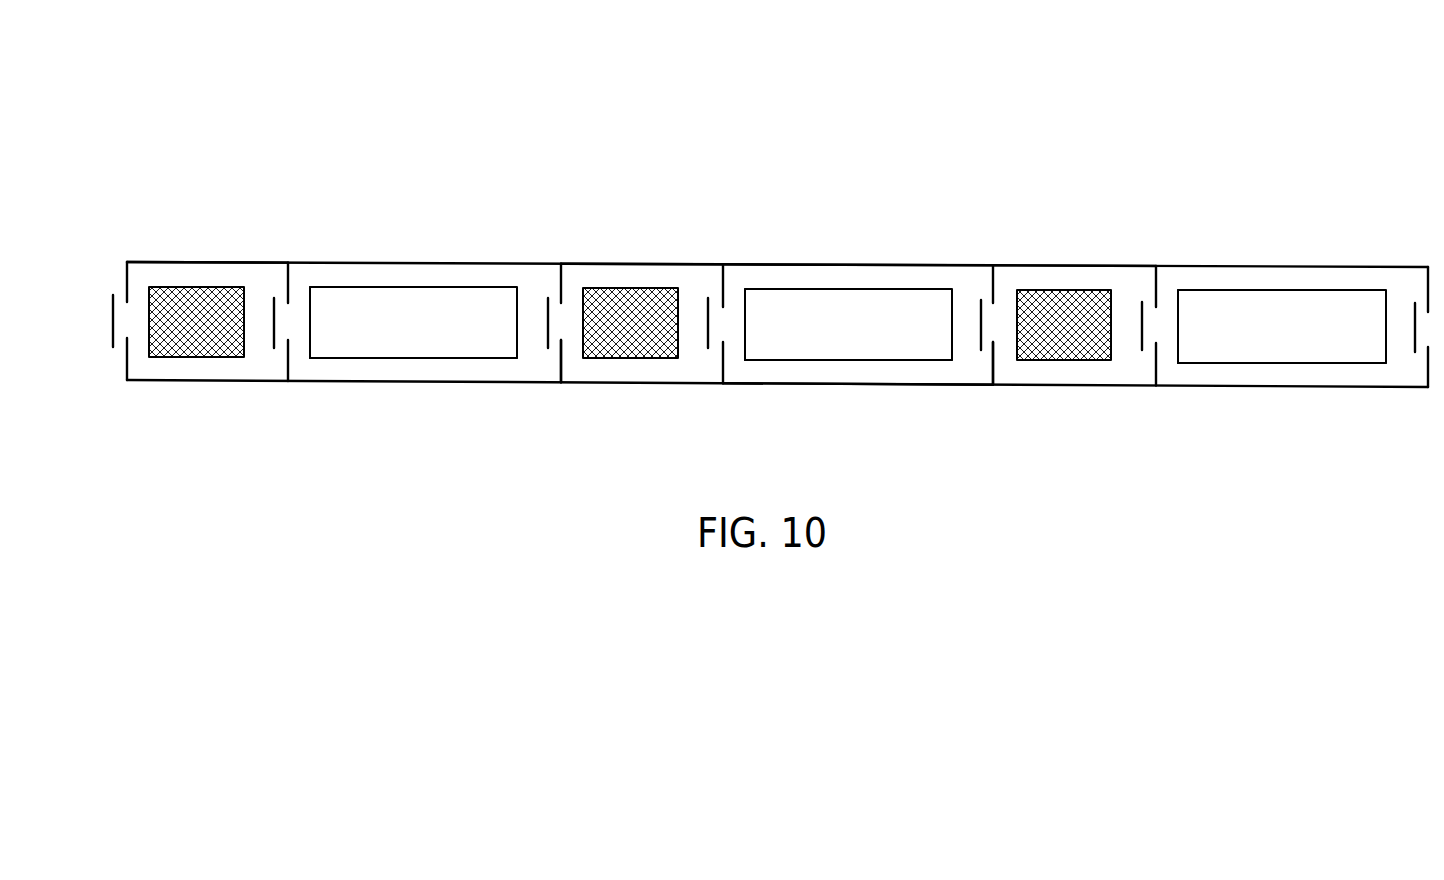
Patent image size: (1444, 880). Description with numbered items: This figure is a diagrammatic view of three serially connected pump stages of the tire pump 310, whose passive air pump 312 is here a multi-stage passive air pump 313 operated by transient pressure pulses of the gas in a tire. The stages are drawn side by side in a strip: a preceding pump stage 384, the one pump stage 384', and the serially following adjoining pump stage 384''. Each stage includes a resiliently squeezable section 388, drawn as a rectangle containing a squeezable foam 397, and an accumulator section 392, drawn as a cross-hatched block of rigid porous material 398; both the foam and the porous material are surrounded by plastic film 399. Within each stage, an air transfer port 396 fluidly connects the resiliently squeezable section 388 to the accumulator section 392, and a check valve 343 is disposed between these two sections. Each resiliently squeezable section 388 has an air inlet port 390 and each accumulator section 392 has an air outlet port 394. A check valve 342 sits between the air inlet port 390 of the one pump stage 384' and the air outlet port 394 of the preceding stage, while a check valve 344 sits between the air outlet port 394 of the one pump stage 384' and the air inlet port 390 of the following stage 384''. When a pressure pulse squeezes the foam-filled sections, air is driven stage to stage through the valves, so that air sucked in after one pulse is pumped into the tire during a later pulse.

The tire pump 310 is at (442, 122).
The passive air pump 312 is at (875, 388).
The multi-stage passive air pump 313 is at (818, 388).
The plastic film 399 is at (865, 264).
The pump stage 384 is at (1292, 372).
The one pump stage 384' is at (836, 370).
The serially following adjoining pump stage 384'' is at (424, 368).
The accumulator section 392 is at (180, 257).
The rigid porous material 398 is at (188, 357).
The resiliently squeezable section 388 is at (382, 258).
The air transfer port 396 is at (287, 322).
The squeezable foam 397 is at (438, 338).
The check valve 343 is at (271, 322).
The check valve 344 is at (545, 322).
The check valve 342 is at (977, 327).
The air inlet port 390 is at (553, 300).
The air outlet port 394 is at (566, 322).